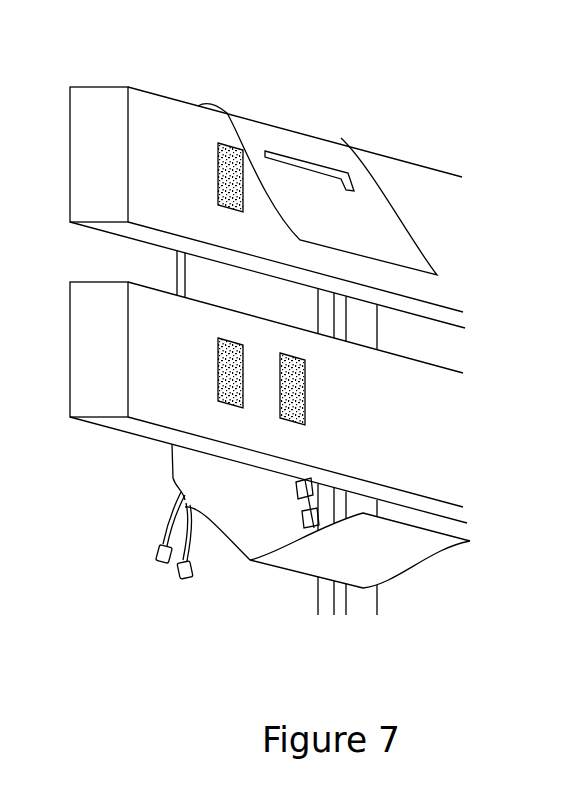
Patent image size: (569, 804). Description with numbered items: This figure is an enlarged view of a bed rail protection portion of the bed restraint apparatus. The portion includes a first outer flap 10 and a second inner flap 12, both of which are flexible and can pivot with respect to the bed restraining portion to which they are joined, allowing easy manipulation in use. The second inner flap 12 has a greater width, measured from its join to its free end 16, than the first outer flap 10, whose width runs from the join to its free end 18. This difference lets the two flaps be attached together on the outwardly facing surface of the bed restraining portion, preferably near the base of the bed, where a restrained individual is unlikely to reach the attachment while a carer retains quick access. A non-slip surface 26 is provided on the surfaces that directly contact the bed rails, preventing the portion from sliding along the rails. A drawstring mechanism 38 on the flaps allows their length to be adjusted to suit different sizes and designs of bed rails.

The first outer flap 10 is at (311, 156).
The non-slip surface 26 is at (433, 223).
The free end 18 is at (432, 290).
The free end 16 is at (492, 525).
The second inner flap 12 is at (181, 263).
The drawstring mechanism 38 is at (190, 592).